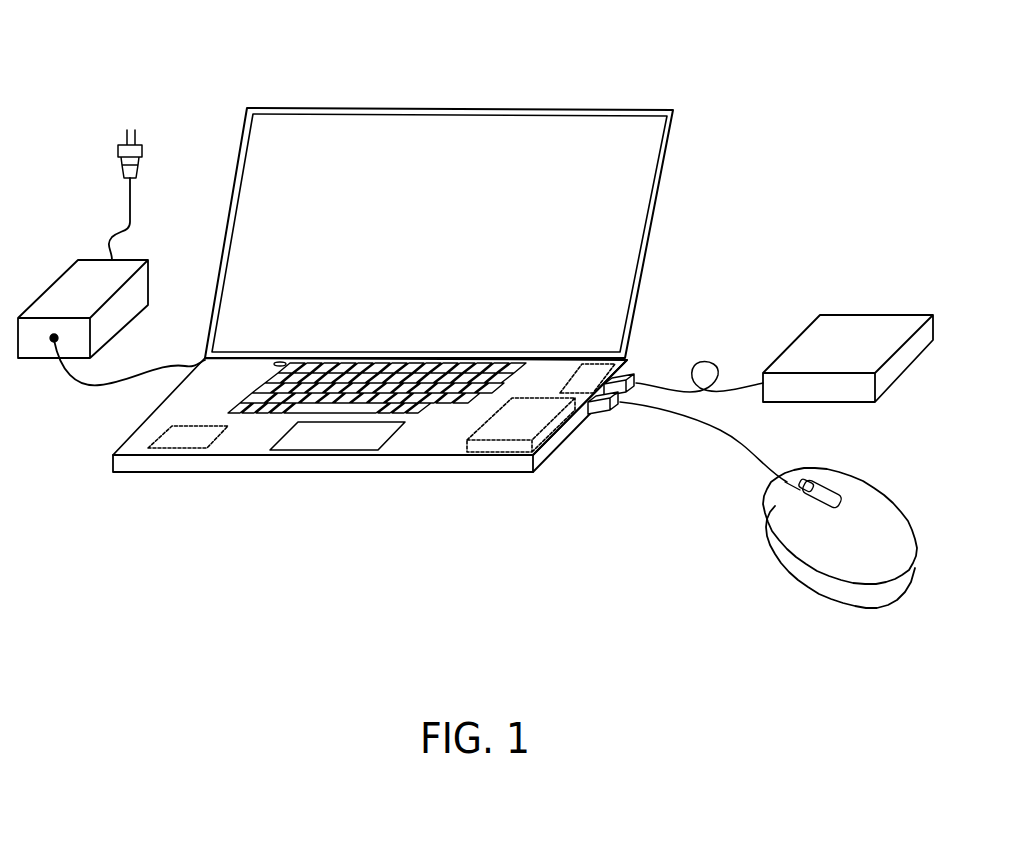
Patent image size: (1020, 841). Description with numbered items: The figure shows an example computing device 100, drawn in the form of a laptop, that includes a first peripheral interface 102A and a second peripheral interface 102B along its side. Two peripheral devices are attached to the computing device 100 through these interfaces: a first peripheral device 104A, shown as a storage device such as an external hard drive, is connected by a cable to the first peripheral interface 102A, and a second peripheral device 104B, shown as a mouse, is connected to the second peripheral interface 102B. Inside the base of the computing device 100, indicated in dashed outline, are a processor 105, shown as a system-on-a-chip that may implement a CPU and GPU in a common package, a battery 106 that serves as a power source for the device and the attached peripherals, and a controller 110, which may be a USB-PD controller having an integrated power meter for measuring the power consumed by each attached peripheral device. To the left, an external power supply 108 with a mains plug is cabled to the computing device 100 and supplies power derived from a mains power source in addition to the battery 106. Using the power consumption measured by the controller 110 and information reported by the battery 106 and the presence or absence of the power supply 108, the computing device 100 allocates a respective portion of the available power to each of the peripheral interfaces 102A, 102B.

The computing device 100 is at (677, 112).
The first peripheral interface 102A is at (648, 381).
The second peripheral interface 102B is at (600, 420).
The first peripheral device 104A is at (820, 315).
The second peripheral device 104B is at (798, 563).
The processor 105 is at (185, 450).
The battery 106 is at (497, 456).
The power supply 108 is at (152, 282).
The controller 110 is at (592, 364).